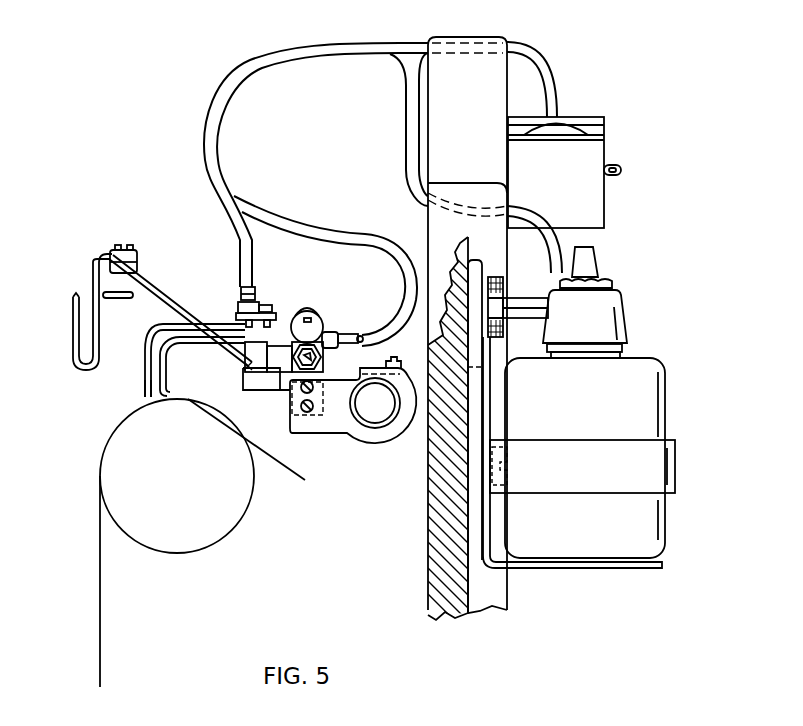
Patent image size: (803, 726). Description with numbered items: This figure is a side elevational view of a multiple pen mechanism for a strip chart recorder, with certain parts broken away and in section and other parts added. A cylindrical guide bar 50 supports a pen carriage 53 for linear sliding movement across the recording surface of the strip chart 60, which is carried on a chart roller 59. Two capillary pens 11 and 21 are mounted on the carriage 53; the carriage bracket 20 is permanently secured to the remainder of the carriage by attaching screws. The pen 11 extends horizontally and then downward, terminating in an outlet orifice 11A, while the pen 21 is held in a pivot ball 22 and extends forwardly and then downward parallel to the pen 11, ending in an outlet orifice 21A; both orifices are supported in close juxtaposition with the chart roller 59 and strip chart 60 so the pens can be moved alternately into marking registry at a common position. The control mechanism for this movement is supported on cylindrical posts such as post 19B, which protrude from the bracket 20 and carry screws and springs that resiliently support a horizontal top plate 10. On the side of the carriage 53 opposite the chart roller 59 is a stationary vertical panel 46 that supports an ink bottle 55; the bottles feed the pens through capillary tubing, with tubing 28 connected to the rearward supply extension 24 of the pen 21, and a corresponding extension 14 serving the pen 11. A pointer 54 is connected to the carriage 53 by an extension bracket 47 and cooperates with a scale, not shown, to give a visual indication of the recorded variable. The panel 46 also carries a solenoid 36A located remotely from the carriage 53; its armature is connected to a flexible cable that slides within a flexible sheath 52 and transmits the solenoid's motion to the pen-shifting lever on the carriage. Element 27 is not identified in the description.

The top plate 10 is at (288, 287).
The capillary pen 11 is at (222, 323).
The outlet orifice 11A is at (168, 393).
The extension 14 is at (346, 342).
The cylindrical post 19B is at (247, 369).
The carriage bracket 20 is at (279, 395).
The capillary pen 21 is at (187, 345).
The outlet orifice 21A is at (146, 397).
The pivot ball 22 is at (330, 325).
The rearward extension 24 is at (368, 324).
The valve knob 27 is at (313, 305).
The capillary tubing 28 is at (384, 252).
The solenoid 36A is at (575, 180).
The stationary panel 46 is at (472, 162).
The extension bracket 47 is at (167, 284).
The cylindrical guide bar 50 is at (387, 414).
The flexible sheath 52 is at (550, 68).
The pen carriage 53 is at (374, 444).
The pointer 54 is at (72, 334).
The ink bottle 55 is at (590, 406).
The chart roller 59 is at (255, 490).
The strip chart 60 is at (101, 634).